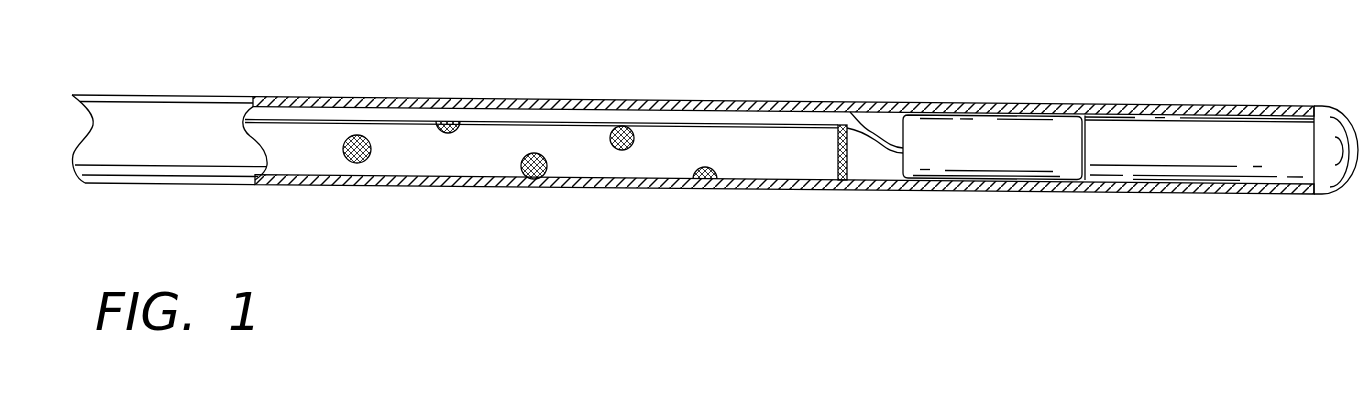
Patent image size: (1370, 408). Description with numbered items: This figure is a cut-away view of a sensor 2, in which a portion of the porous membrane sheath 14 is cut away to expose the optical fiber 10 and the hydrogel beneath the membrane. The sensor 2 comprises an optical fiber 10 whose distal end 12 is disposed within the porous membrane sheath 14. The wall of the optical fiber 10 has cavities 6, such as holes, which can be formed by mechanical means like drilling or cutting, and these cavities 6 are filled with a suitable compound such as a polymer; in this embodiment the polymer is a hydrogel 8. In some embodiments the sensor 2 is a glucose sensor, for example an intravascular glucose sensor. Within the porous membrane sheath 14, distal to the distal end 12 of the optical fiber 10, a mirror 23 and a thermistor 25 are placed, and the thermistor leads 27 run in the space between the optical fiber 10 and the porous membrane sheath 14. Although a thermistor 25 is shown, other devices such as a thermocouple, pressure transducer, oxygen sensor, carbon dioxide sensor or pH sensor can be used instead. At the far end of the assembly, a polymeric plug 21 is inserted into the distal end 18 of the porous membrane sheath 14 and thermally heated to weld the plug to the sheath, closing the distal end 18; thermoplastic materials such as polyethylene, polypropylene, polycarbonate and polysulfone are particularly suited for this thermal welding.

The sensor 2 is at (145, 193).
The porous membrane sheath 14 is at (130, 123).
The thermistor leads 27 is at (743, 110).
The optical fiber 10 is at (430, 155).
The cavities 6 is at (341, 165).
The hydrogel 8 is at (527, 178).
The distal end 12 is at (838, 163).
The mirror 23 is at (853, 165).
The thermistor 25 is at (1012, 138).
The polymeric plug 21 is at (1217, 148).
The distal end 18 is at (1323, 105).